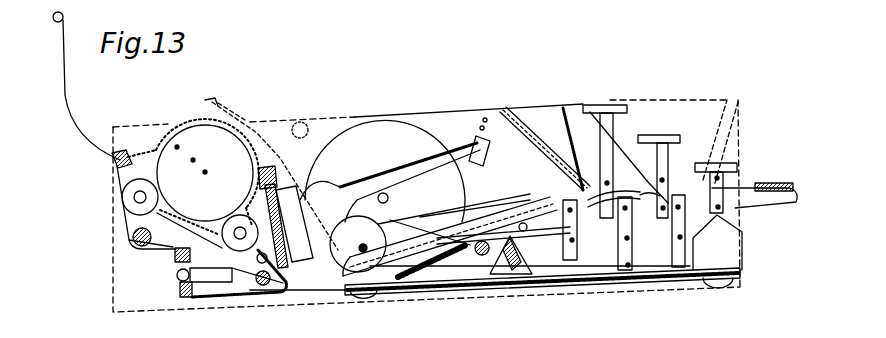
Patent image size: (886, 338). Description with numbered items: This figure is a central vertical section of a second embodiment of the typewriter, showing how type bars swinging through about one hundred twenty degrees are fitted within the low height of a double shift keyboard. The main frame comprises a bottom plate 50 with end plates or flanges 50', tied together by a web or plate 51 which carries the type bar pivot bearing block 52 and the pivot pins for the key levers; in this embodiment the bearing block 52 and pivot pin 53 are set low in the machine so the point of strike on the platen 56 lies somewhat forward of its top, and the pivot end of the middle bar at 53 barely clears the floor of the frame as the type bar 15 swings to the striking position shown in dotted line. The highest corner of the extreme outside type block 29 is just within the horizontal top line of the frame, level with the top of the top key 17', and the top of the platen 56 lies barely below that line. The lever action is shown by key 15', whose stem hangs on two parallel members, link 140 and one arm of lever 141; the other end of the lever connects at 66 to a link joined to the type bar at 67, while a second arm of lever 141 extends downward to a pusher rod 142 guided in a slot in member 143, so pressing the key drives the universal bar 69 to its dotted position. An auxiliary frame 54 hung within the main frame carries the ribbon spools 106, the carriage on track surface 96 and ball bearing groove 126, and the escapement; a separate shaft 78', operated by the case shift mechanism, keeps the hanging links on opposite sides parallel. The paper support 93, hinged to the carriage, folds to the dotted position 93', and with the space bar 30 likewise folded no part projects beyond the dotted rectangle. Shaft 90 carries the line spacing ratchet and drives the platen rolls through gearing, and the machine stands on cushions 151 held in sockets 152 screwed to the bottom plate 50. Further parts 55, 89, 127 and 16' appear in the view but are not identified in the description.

The paper support 93 is at (92, 90).
The wire guide ring 93' is at (298, 115).
The type bar 15 is at (452, 178).
The platen 56 is at (193, 177).
The ribbon spools 106 is at (385, 171).
The type bar pivot bearing block 52 is at (378, 202).
The type block 29 is at (478, 140).
The end plates or flanges 50' is at (514, 148).
The web or plate 51 is at (568, 117).
The pivot pin 53 is at (366, 246).
The auxiliary frame 54 is at (257, 266).
The pulley 55 is at (127, 210).
The shaft 90 is at (136, 245).
The bearing block 127 is at (178, 271).
The ball bearing groove 126 is at (180, 293).
The roller 89 is at (258, 262).
The track surface 96 is at (264, 284).
The type bar link connection 67 is at (338, 287).
The shaft 78' is at (432, 289).
The universal bar 69 is at (483, 256).
The slotted guide member 143 is at (543, 283).
The pusher rod 142 is at (565, 262).
The sockets 152 is at (742, 280).
The cushions 151 is at (717, 287).
The top key 17' is at (608, 150).
The key 15' is at (659, 165).
The T post 16' is at (716, 176).
The lever-to-link connection 66 is at (623, 193).
The link 140 is at (642, 196).
The lever 141 is at (640, 225).
The space bar 30 is at (732, 102).
The bottom plate 50 is at (717, 242).